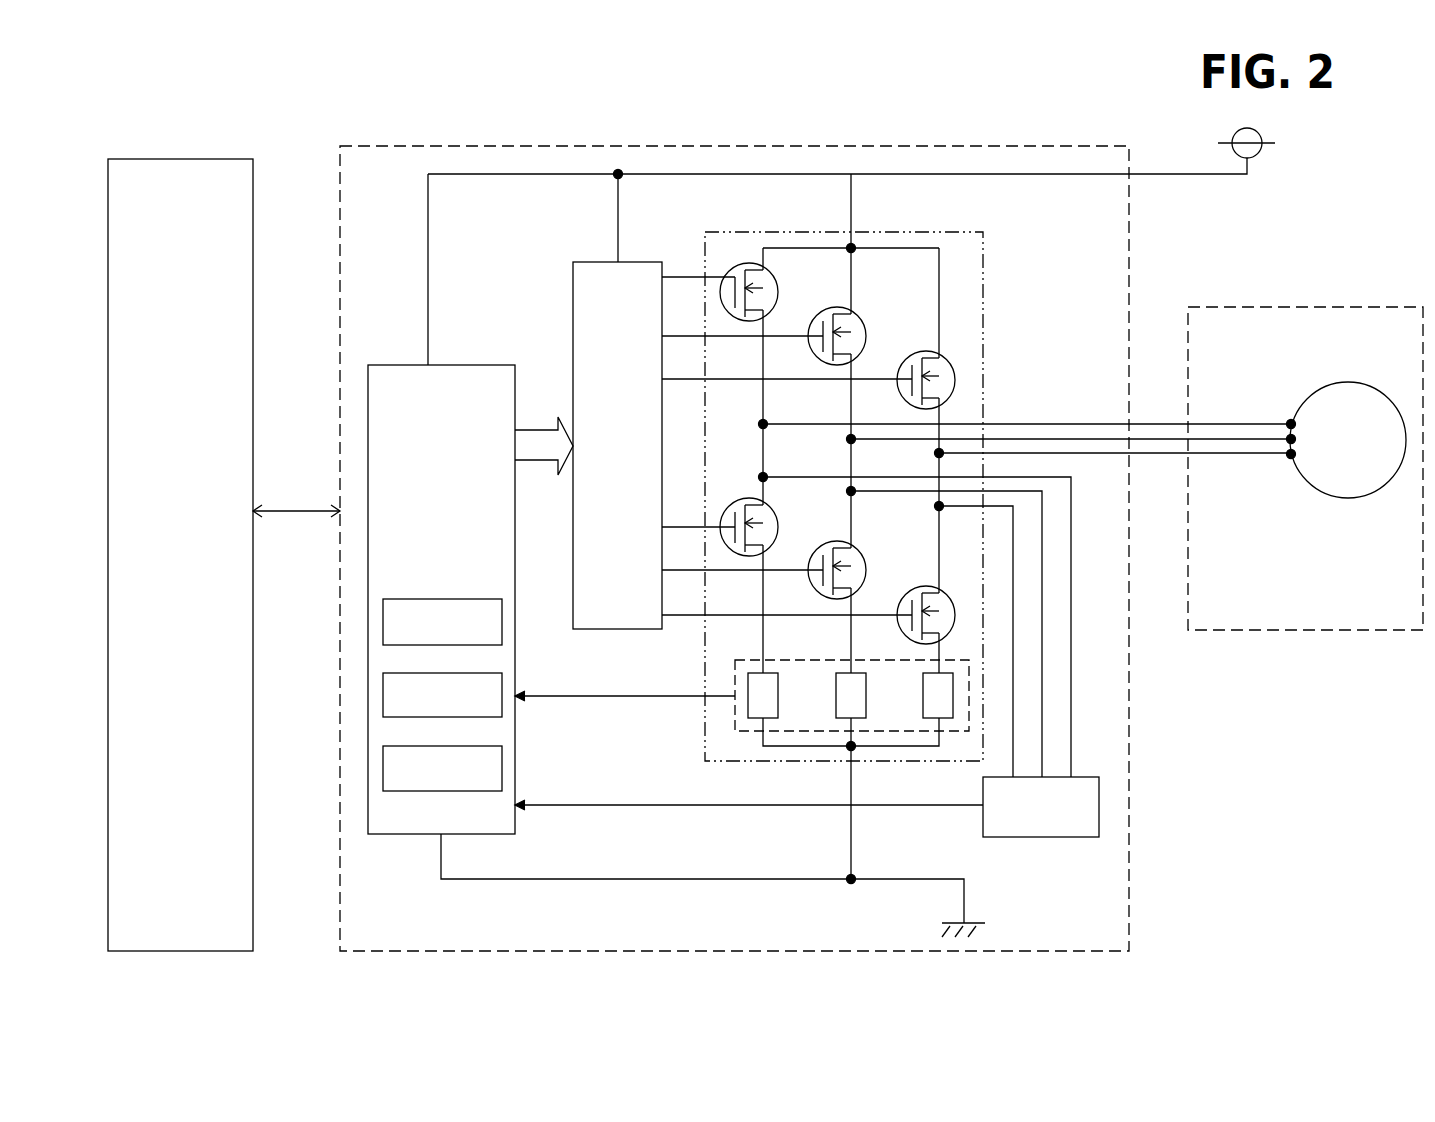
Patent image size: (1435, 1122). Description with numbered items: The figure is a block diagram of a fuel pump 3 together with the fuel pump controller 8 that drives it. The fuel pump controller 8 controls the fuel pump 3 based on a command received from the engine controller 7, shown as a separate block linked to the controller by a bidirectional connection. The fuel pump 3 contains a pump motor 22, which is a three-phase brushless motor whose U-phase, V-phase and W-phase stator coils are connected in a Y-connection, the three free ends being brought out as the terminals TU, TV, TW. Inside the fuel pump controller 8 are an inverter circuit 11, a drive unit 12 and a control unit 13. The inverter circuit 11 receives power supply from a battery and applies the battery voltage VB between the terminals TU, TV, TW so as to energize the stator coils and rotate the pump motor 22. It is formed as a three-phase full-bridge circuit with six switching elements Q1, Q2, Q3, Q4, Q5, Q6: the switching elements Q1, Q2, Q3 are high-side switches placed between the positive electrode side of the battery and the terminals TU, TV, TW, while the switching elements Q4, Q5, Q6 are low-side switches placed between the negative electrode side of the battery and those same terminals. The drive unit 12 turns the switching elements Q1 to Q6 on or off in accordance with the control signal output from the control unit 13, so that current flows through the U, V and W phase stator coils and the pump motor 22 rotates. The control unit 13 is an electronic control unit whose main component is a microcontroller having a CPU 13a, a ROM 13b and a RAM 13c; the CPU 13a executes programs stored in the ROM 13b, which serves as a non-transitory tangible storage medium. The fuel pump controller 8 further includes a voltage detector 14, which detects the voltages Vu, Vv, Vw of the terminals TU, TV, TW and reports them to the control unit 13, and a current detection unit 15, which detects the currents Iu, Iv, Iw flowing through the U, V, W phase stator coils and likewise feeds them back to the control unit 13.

The engine controller 7 is at (196, 159).
The fuel pump controller 8 is at (1045, 146).
The inverter circuit 11 is at (895, 235).
The drive unit 12 is at (632, 262).
The control unit 13 is at (470, 365).
The CPU 13a is at (440, 596).
The ROM 13b is at (440, 670).
The RAM 13c is at (440, 744).
The voltage detector 14 is at (1080, 777).
The current detection unit 15 is at (826, 657).
The fuel pump 3 is at (1370, 312).
The pump motor 22 is at (1352, 383).
The switching element Q1 is at (773, 277).
The switching element Q2 is at (863, 322).
The switching element Q3 is at (945, 364).
The switching element Q4 is at (773, 512).
The switching element Q5 is at (863, 556).
The switching element Q6 is at (945, 599).
The U-phase terminal TU is at (1291, 423).
The V-phase terminal TV is at (1291, 442).
The W-phase terminal TW is at (1291, 456).
The battery voltage VB is at (1260, 139).